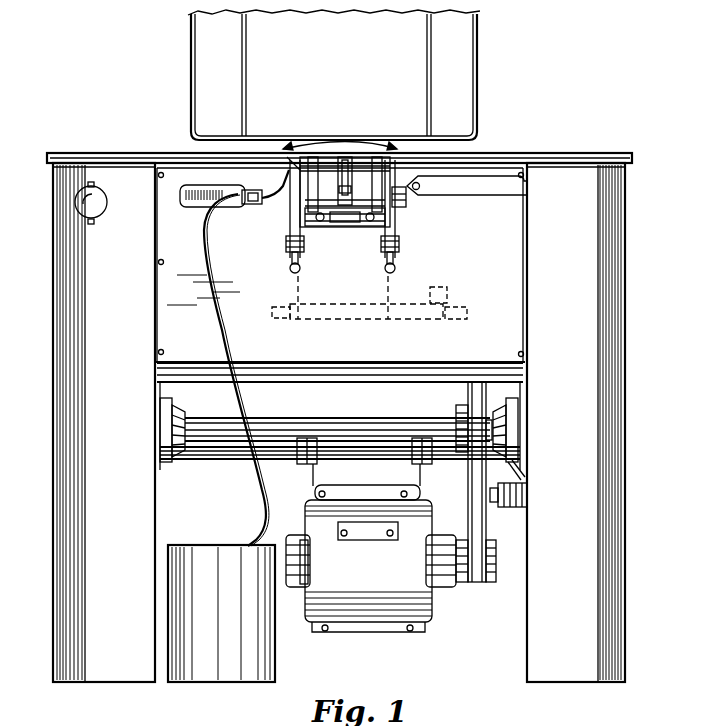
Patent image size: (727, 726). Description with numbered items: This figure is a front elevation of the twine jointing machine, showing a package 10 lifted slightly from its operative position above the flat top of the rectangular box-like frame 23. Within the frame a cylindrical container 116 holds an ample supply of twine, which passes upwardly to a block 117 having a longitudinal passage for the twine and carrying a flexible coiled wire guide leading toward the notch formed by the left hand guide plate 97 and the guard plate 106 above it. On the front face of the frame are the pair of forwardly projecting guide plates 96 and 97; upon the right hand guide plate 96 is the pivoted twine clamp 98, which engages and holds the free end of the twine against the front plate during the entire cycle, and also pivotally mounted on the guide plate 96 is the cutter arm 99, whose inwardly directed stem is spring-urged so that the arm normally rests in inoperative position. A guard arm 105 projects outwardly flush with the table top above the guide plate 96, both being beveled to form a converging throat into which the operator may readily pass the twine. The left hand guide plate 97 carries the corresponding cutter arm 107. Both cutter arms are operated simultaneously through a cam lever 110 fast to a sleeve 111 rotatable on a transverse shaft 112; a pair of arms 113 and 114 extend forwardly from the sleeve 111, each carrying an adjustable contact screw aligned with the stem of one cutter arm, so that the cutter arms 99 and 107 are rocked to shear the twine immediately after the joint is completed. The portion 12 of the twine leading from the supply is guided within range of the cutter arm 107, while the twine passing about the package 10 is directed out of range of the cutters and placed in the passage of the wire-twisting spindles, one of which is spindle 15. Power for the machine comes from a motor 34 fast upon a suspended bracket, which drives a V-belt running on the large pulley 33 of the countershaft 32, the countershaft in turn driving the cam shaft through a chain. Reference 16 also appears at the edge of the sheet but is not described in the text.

The package 10 is at (462, 91).
The portion of the twine 12 is at (284, 146).
The frame 23 is at (590, 530).
The countershaft 32 is at (357, 424).
The large pulley 33 is at (468, 489).
The motor 34 is at (422, 614).
The guide plate 96 is at (382, 224).
The guide plate 97 is at (290, 236).
The twine clamp 98 is at (405, 199).
The cutter arm 99 is at (393, 224).
The guard arm 105 is at (398, 158).
The guard plate 106 is at (287, 158).
The cutter arm 107 is at (290, 217).
The cam lever 110 is at (448, 292).
The sleeve 111 is at (352, 312).
The transverse shaft 112 is at (447, 318).
The arm 113 is at (392, 284).
The arm 114 is at (298, 280).
The cylindrical container 116 is at (265, 652).
The block 117 is at (252, 190).
The part 16 is at (540, 725).
The wire-twisting spindle 15 is at (676, 719).